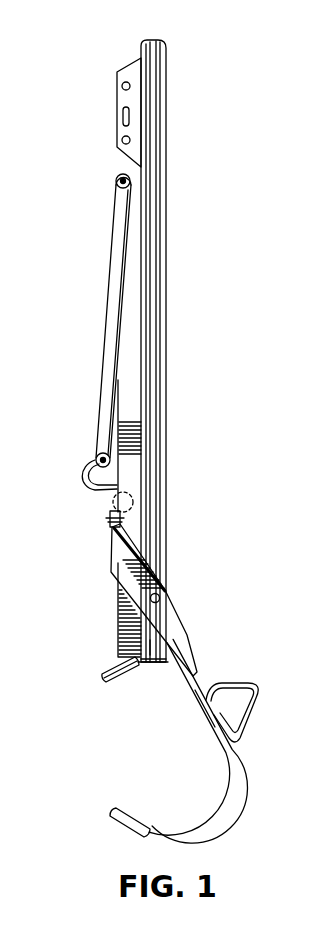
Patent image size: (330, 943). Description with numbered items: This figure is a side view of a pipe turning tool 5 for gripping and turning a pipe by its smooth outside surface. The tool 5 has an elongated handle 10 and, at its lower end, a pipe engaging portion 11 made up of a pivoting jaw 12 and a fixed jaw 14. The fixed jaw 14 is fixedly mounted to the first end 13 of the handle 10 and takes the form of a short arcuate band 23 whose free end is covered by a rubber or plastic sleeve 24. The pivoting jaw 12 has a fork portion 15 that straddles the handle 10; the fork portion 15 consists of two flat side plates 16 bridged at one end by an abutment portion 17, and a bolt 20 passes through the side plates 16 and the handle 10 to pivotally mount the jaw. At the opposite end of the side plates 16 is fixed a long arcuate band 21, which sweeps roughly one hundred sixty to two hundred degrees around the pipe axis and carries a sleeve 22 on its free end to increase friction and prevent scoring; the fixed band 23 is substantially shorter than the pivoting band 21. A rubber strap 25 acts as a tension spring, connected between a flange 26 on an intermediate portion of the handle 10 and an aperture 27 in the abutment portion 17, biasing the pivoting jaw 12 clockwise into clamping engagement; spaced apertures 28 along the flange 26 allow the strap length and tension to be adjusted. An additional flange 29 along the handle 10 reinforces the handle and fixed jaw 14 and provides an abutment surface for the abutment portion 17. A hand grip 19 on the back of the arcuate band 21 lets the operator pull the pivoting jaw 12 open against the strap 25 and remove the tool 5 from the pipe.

The pipe turning tool 5 is at (78, 296).
The elongated handle 10 is at (161, 253).
The pipe engaging portion 11 is at (125, 690).
The pivoting jaw 12 is at (215, 832).
The first end of the handle 13 is at (150, 640).
The fixed jaw 14 is at (103, 672).
The fork portion 15 is at (119, 560).
The side plates 16 is at (176, 616).
The abutment portion 17 is at (110, 523).
The hand grip 19 is at (251, 685).
The bolt 20 is at (160, 593).
The arcuate band 21 is at (208, 717).
The sleeve 22 is at (122, 828).
The arcuate band 23 is at (140, 665).
The sleeve 24 is at (110, 677).
The rubber strap 25 is at (101, 358).
The flange 26 is at (115, 99).
The aperture 27 is at (113, 520).
The apertures 28 is at (120, 118).
The additional flange 29 is at (118, 595).